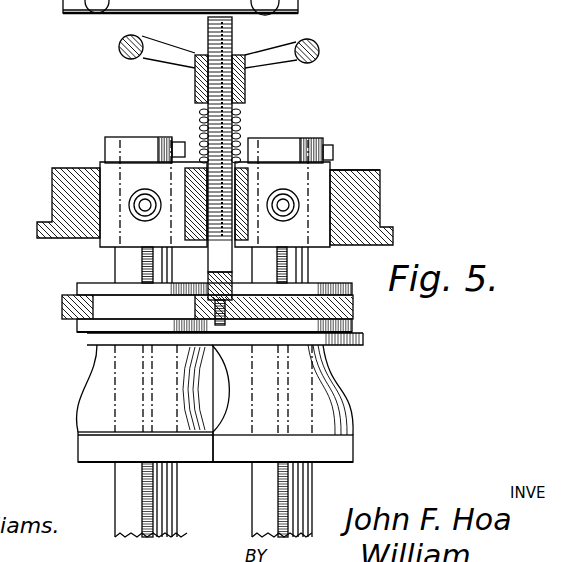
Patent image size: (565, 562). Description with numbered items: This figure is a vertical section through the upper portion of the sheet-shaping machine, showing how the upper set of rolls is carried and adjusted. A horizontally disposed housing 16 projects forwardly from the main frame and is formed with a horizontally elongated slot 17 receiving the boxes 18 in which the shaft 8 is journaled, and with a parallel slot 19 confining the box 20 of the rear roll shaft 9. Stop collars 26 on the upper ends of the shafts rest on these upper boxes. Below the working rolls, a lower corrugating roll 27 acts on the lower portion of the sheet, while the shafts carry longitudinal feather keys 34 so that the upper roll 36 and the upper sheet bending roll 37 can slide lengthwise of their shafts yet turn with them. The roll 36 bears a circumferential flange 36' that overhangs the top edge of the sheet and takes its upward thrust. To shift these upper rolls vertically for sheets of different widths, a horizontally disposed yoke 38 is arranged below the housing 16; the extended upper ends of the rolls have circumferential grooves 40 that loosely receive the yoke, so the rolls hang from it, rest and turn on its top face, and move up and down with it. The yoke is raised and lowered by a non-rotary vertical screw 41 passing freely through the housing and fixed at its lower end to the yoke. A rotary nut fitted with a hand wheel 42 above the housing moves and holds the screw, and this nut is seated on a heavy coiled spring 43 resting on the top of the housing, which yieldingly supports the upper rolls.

The shaft 8 is at (308, 477).
The rear roll shaft 9 is at (120, 488).
The housing 16 is at (350, 173).
The slot 17 is at (352, 205).
The box 18 is at (312, 147).
The slot 19 is at (105, 195).
The box 20 is at (133, 228).
The stop collar 26 is at (113, 143).
The corrugating roll 27 is at (268, 188).
The feather key 34 is at (283, 518).
The upper roll 36 is at (293, 403).
The flange 36' is at (243, 345).
The upper sheet bending roll 37 is at (88, 392).
The yoke 38 is at (63, 308).
The circumferential groove 40 is at (144, 307).
The vertical screw 41 is at (233, 27).
The hand wheel 42 is at (319, 49).
The coiled spring 43 is at (200, 116).